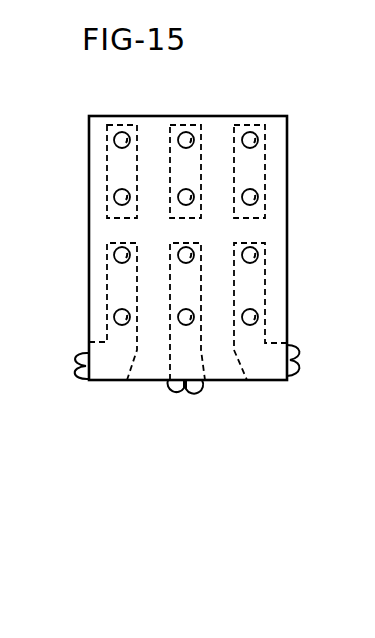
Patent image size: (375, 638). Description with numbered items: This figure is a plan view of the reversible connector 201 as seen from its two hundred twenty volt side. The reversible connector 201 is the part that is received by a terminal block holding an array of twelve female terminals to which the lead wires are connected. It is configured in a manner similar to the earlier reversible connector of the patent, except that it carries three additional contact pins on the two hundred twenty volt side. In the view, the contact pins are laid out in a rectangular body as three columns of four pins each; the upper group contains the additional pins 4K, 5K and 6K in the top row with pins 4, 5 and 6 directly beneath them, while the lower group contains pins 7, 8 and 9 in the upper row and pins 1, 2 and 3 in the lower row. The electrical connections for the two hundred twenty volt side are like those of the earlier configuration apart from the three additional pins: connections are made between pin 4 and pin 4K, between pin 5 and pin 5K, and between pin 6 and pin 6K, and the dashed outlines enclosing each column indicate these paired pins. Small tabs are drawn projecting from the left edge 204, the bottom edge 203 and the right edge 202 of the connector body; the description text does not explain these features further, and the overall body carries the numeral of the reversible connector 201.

The contact pin 1 is at (114, 317).
The contact pin 2 is at (192, 313).
The contact pin 3 is at (258, 317).
The contact pin 4 is at (114, 197).
The contact pin 5 is at (192, 193).
The contact pin 6 is at (258, 197).
The contact pin 7 is at (114, 255).
The contact pin 8 is at (192, 250).
The contact pin 9 is at (258, 255).
The additional contact pin 4K is at (122, 132).
The additional contact pin 5K is at (186, 132).
The additional contact pin 6K is at (250, 132).
The reversible connector 201 is at (170, 420).
The right mounting tab 202 is at (296, 374).
The bottom mounting tab 203 is at (200, 392).
The left mounting tab 204 is at (78, 378).